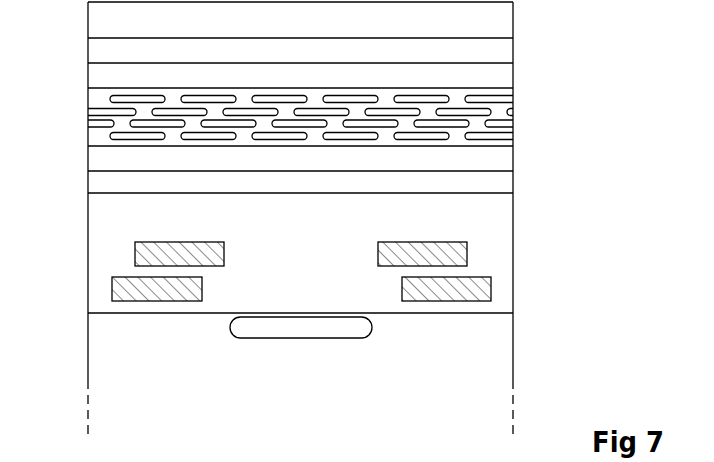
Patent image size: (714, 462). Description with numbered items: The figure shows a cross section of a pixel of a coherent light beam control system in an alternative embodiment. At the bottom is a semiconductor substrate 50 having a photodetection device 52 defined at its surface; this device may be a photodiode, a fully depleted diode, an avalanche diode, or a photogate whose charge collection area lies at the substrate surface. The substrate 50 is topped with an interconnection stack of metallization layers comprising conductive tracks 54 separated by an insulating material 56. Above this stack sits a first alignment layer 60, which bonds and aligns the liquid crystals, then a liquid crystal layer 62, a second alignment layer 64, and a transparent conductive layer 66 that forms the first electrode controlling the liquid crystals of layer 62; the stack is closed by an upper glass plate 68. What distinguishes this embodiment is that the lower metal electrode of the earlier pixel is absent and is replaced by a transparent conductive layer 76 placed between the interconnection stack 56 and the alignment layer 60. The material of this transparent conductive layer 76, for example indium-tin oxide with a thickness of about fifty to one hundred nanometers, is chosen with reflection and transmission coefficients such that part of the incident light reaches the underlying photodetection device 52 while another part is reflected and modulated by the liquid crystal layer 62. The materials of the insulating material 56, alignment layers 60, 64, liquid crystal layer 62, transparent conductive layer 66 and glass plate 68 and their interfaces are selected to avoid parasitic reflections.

The semiconductor substrate 50 is at (497, 368).
The photodetection device 52 is at (243, 328).
The conductive tracks 54 is at (157, 250).
The insulating material 56 is at (498, 220).
The first alignment layer 60 is at (497, 157).
The liquid crystal layer 62 is at (495, 112).
The second alignment layer 64 is at (495, 77).
The transparent conductive layer 66 is at (495, 50).
The upper glass plate 68 is at (495, 19).
The transparent conductive layer 76 is at (497, 182).